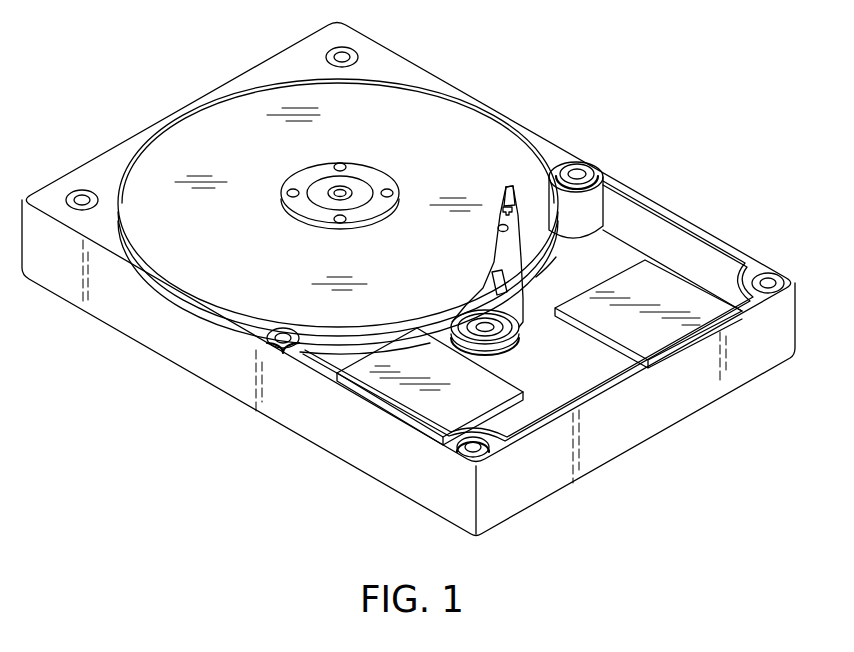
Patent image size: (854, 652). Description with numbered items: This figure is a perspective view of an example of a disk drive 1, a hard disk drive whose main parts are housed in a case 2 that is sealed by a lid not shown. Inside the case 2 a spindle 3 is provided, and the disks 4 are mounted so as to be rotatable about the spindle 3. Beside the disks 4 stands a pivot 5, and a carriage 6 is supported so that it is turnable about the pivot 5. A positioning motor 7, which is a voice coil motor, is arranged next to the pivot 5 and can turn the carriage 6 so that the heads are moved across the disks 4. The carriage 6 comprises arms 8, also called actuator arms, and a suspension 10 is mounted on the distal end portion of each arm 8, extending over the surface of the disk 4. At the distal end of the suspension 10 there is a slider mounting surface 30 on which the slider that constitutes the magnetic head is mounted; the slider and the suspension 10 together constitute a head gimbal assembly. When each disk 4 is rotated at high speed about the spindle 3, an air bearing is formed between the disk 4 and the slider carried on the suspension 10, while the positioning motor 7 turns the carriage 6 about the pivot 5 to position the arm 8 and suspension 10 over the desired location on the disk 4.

The disk drive 1 is at (408, 279).
The case 2 is at (210, 370).
The spindle 3 is at (353, 182).
The disks 4 is at (450, 125).
The pivot 5 is at (502, 343).
The carriage 6 is at (562, 244).
The positioning motor 7 is at (413, 405).
The arm 8 is at (497, 212).
The suspension 10 is at (470, 197).
The slider mounting surface 30 is at (497, 214).